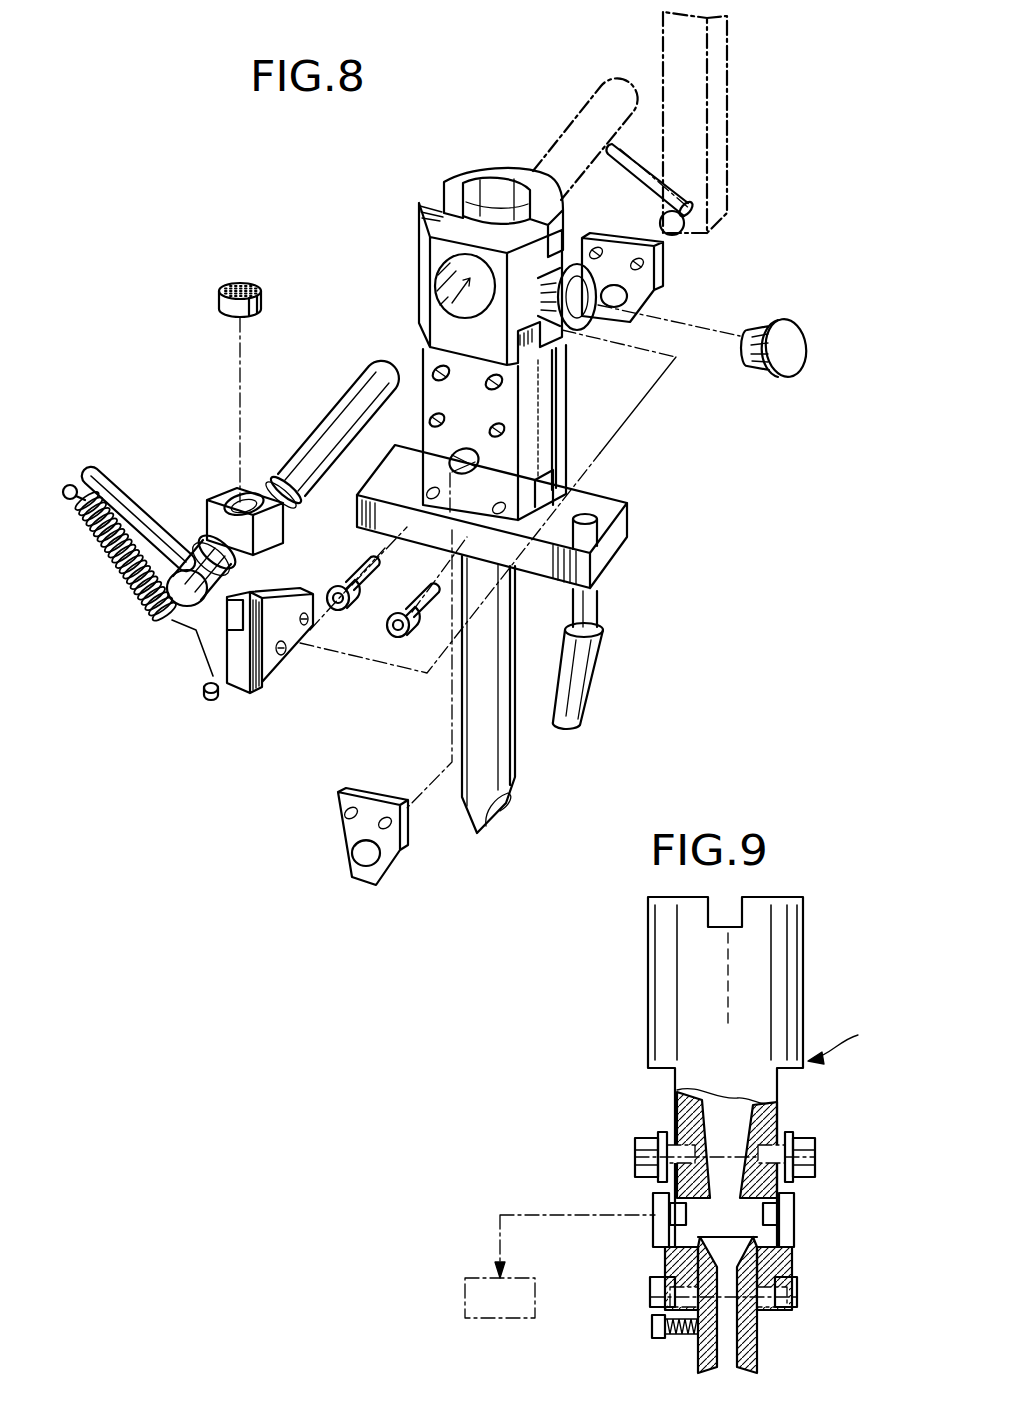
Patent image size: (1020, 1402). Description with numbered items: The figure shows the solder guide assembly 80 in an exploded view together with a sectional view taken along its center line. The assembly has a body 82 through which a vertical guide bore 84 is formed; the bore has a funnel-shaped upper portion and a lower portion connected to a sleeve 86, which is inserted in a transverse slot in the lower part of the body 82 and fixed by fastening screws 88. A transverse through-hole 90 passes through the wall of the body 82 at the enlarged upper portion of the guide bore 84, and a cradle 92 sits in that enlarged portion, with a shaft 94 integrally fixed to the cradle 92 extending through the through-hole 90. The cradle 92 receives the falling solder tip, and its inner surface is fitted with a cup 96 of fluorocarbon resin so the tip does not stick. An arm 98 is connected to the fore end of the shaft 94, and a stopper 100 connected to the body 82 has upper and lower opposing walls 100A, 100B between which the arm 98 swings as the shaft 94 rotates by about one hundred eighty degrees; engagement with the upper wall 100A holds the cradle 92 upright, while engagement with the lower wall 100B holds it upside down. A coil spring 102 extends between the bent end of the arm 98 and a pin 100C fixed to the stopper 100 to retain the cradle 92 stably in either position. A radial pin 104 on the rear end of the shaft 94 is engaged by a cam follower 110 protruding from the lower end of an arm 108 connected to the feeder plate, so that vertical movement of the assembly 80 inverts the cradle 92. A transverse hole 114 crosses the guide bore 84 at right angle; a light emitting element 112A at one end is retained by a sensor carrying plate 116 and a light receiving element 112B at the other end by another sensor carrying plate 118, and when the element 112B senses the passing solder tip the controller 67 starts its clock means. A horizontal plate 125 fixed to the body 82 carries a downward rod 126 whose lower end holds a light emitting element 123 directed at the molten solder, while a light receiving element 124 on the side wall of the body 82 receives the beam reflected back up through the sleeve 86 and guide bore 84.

In FIG. 9, the controller 67 is at (500, 1322).
In FIG. 8, the solder guide assembly 80 is at (640, 459).
In FIG. 9, the solder guide assembly 80 is at (852, 1032).
In FIG. 8, the body 82 is at (468, 178).
In FIG. 9, the body 82 is at (792, 998).
In FIG. 9, the guide bore 84 is at (737, 1097).
In FIG. 8, the sleeve 86 is at (516, 766).
In FIG. 9, the sleeve 86 is at (762, 1350).
In FIG. 8, the fastening screws 88 is at (385, 640).
In FIG. 9, the fastening screws 88 is at (655, 1298).
In FIG. 8, the transverse through-hole 90 is at (440, 293).
In FIG. 8, the cradle 92 is at (222, 500).
In FIG. 8, the shaft 94 is at (343, 395).
In FIG. 8, the cup 96 is at (218, 306).
In FIG. 8, the arm 98 is at (133, 468).
In FIG. 8, the stopper 100 is at (259, 686).
In FIG. 8, the upper wall 100A is at (200, 633).
In FIG. 8, the lower wall 100B is at (285, 690).
In FIG. 8, the pin 100C is at (208, 697).
In FIG. 8, the coil spring 102 is at (125, 578).
In FIG. 8, the pin 104 is at (668, 173).
In FIG. 8, the arm 108 is at (727, 72).
In FIG. 8, the cam follower 110 is at (683, 230).
In FIG. 8, the light emitting element 112A is at (640, 300).
In FIG. 9, the light emitting element 112A is at (790, 1237).
In FIG. 8, the light receiving element 112B is at (370, 868).
In FIG. 9, the light receiving element 112B is at (655, 1225).
In FIG. 8, the transverse hole 114 is at (452, 463).
In FIG. 9, the transverse hole 114 is at (740, 1230).
In FIG. 8, the sensor carrying plate 116 is at (665, 270).
In FIG. 9, the sensor carrying plate 116 is at (785, 1140).
In FIG. 8, the sensor carrying plate 118 is at (347, 744).
In FIG. 9, the sensor carrying plate 118 is at (665, 1140).
In FIG. 8, the light emitting element 123 is at (588, 712).
In FIG. 8, the light receiving element 124 is at (776, 378).
In FIG. 8, the horizontal plate 125 is at (632, 526).
In FIG. 8, the rod 126 is at (600, 596).